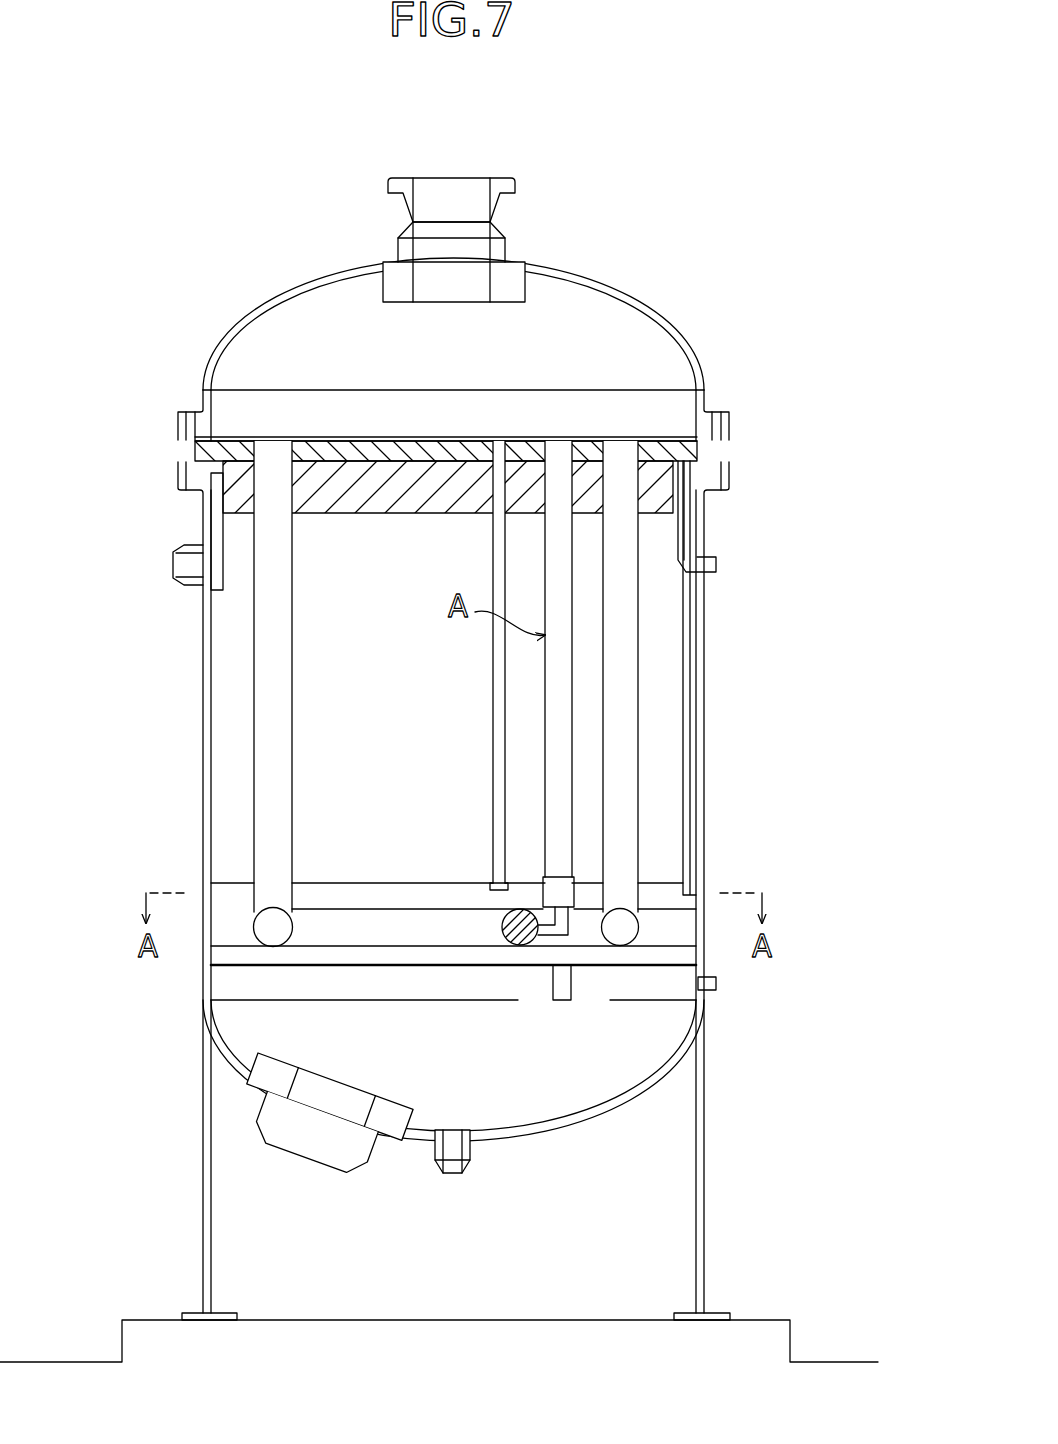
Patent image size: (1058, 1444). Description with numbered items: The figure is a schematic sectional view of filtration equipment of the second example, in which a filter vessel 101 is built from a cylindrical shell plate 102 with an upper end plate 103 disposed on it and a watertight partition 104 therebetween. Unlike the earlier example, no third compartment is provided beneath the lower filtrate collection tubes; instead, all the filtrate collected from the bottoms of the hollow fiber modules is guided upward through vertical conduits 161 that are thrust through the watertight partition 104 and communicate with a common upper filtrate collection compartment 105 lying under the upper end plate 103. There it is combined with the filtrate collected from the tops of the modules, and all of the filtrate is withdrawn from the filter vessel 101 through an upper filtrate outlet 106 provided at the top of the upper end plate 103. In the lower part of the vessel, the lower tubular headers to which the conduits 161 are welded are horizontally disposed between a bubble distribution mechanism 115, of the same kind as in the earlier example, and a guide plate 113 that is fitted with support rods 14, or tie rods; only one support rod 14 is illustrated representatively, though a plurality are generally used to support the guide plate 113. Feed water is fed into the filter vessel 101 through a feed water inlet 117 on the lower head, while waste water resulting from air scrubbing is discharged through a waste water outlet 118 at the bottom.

The support rod 14 is at (493, 668).
The filter vessel 101 is at (439, 770).
The shell plate 102 is at (203, 718).
The upper end plate 103 is at (636, 296).
The watertight partition 104 is at (700, 456).
The upper filtrate collection compartment 105 is at (248, 344).
The upper filtrate outlet 106 is at (482, 242).
The guide plate 113 is at (364, 882).
The bubble distribution mechanism 115 is at (236, 966).
The feed water inlet 117 is at (315, 1142).
The waste water outlet 118 is at (450, 1176).
The conduits 161 is at (250, 636).